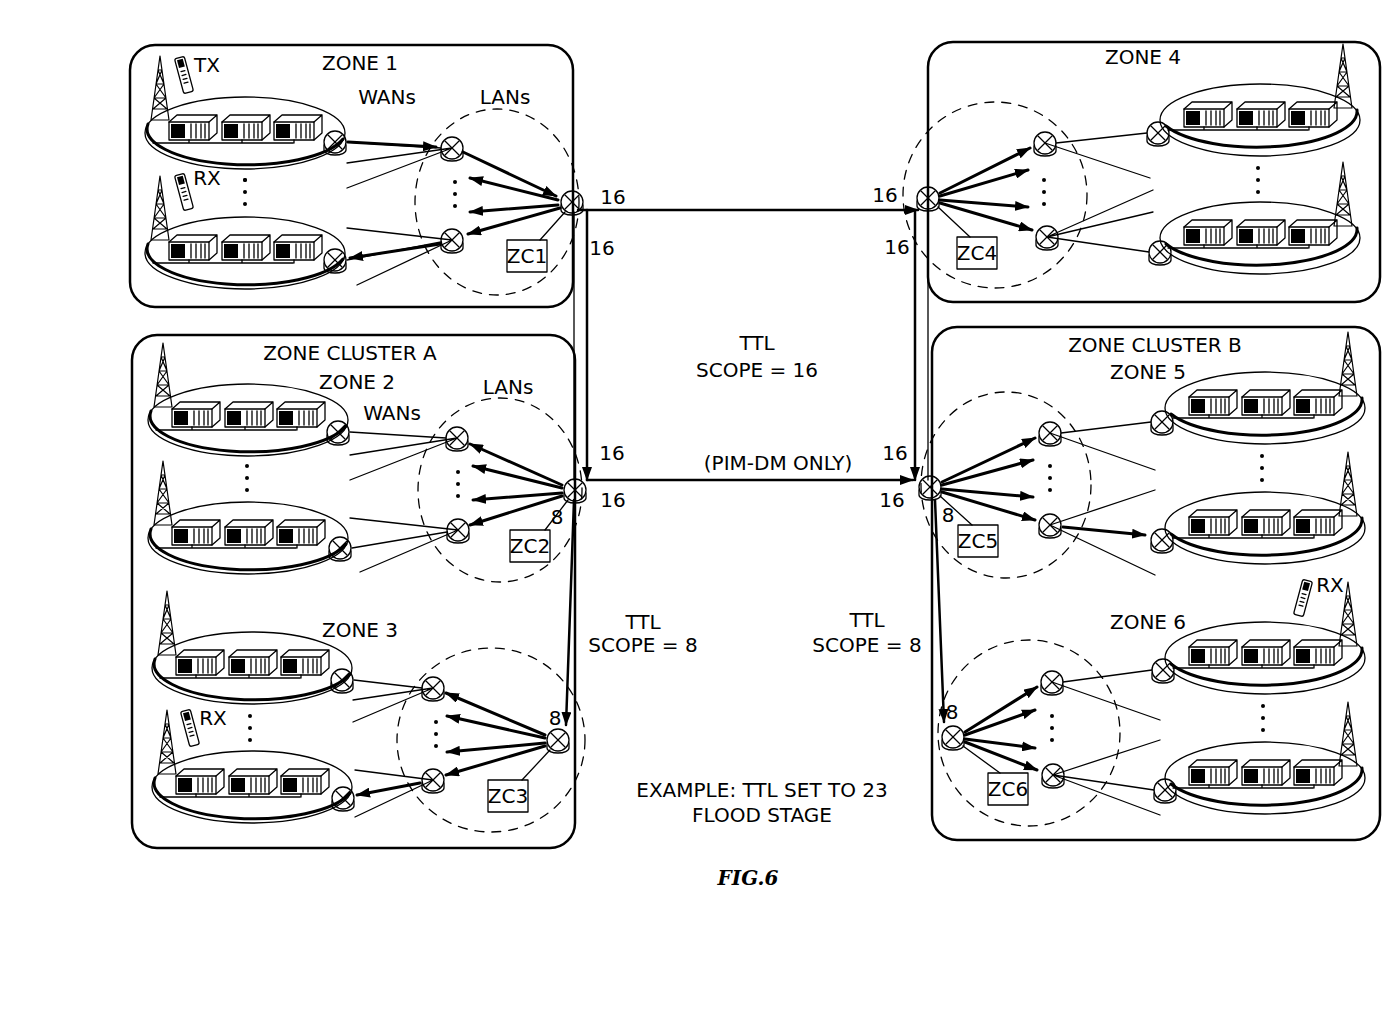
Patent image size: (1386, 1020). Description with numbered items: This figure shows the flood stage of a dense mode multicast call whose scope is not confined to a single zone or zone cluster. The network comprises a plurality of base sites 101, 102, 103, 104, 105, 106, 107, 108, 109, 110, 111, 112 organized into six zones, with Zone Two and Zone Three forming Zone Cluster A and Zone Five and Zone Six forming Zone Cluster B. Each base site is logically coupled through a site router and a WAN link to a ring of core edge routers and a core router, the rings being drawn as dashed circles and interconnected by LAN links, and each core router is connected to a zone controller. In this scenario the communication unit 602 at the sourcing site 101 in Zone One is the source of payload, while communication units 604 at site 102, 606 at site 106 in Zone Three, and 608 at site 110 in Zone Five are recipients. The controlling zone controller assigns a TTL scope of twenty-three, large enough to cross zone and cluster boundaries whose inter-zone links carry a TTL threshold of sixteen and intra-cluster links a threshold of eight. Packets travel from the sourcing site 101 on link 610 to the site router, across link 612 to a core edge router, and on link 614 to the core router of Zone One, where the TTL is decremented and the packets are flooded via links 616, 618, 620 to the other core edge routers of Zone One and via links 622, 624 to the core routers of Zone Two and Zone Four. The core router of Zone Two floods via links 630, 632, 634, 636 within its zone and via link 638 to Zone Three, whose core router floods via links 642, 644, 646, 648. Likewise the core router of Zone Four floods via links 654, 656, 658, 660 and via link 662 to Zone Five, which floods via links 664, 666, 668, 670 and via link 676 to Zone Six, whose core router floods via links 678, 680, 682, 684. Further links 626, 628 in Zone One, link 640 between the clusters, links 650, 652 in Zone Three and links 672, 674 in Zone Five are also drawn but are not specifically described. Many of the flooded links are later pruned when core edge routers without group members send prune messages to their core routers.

The base site 101 is at (270, 98).
The base site 102 is at (154, 264).
The base site 103 is at (230, 389).
The base site 104 is at (232, 505).
The base site 105 is at (232, 635).
The base site 106 is at (294, 765).
The base site 107 is at (1276, 87).
The base site 108 is at (1276, 207).
The base site 109 is at (1284, 377).
The base site 110 is at (1284, 497).
The base site 111 is at (1246, 627).
The base site 112 is at (1288, 741).
The communication unit 602 is at (196, 84).
The communication unit 604 is at (196, 200).
The communication unit 606 is at (202, 738).
The communication unit 608 is at (1296, 604).
The link 610 is at (252, 184).
The link 612 is at (404, 142).
The link 614 is at (514, 168).
The link 616 is at (520, 190).
The link 618 is at (514, 206).
The link 620 is at (500, 238).
The link 622 is at (596, 330).
The link 624 is at (723, 207).
The packet path 626 is at (375, 239).
The LAN segment 628 is at (247, 286).
The link 630 is at (520, 454).
The link 632 is at (525, 475).
The link 634 is at (515, 494).
The link 636 is at (504, 528).
The link 638 is at (556, 626).
The inter-cluster link 640 is at (656, 473).
The link 642 is at (488, 700).
The link 644 is at (500, 725).
The link 646 is at (488, 746).
The link 648 is at (477, 781).
The packet path 650 is at (364, 779).
The LAN segment 652 is at (225, 816).
The link 654 is at (988, 154).
The link 656 is at (985, 167).
The link 658 is at (990, 203).
The link 660 is at (1004, 234).
The link 662 is at (908, 330).
The link 664 is at (990, 444).
The link 666 is at (988, 455).
The link 668 is at (994, 493).
The link 670 is at (1008, 524).
The packet path 672 is at (1129, 523).
The LAN segment 674 is at (1249, 564).
The link 676 is at (943, 604).
The link 678 is at (1003, 692).
The link 680 is at (1008, 707).
The link 682 is at (1000, 744).
The link 684 is at (981, 760).